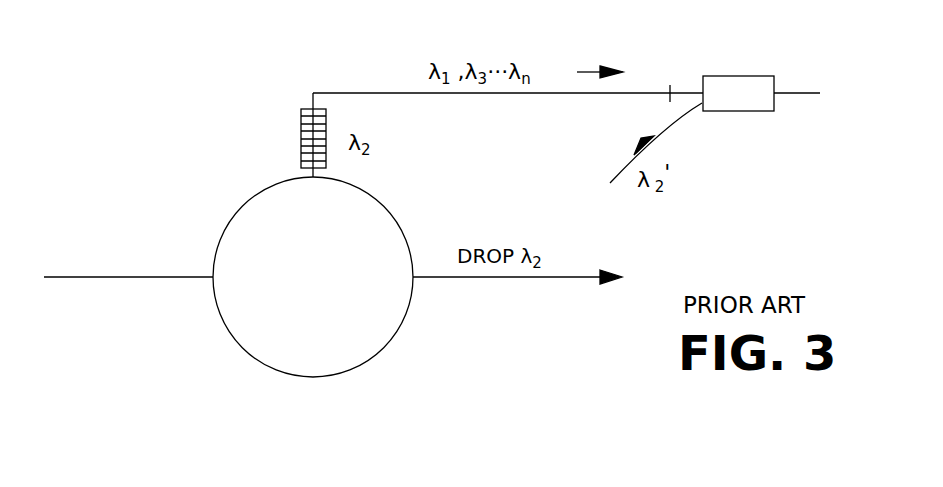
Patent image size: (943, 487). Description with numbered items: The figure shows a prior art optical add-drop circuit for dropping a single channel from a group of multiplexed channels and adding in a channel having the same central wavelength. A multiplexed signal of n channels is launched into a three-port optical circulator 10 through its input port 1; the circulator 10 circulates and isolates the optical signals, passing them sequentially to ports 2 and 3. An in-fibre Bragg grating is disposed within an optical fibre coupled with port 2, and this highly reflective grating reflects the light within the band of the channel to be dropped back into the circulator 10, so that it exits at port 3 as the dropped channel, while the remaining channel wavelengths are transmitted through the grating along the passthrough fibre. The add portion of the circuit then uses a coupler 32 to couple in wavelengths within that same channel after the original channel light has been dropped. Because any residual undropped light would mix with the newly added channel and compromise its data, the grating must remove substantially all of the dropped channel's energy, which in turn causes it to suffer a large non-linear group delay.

The optical circulator 10 is at (263, 312).
The input port 1 is at (143, 277).
The port 2 is at (312, 152).
The port 3 is at (505, 277).
The coupler 32 is at (758, 76).